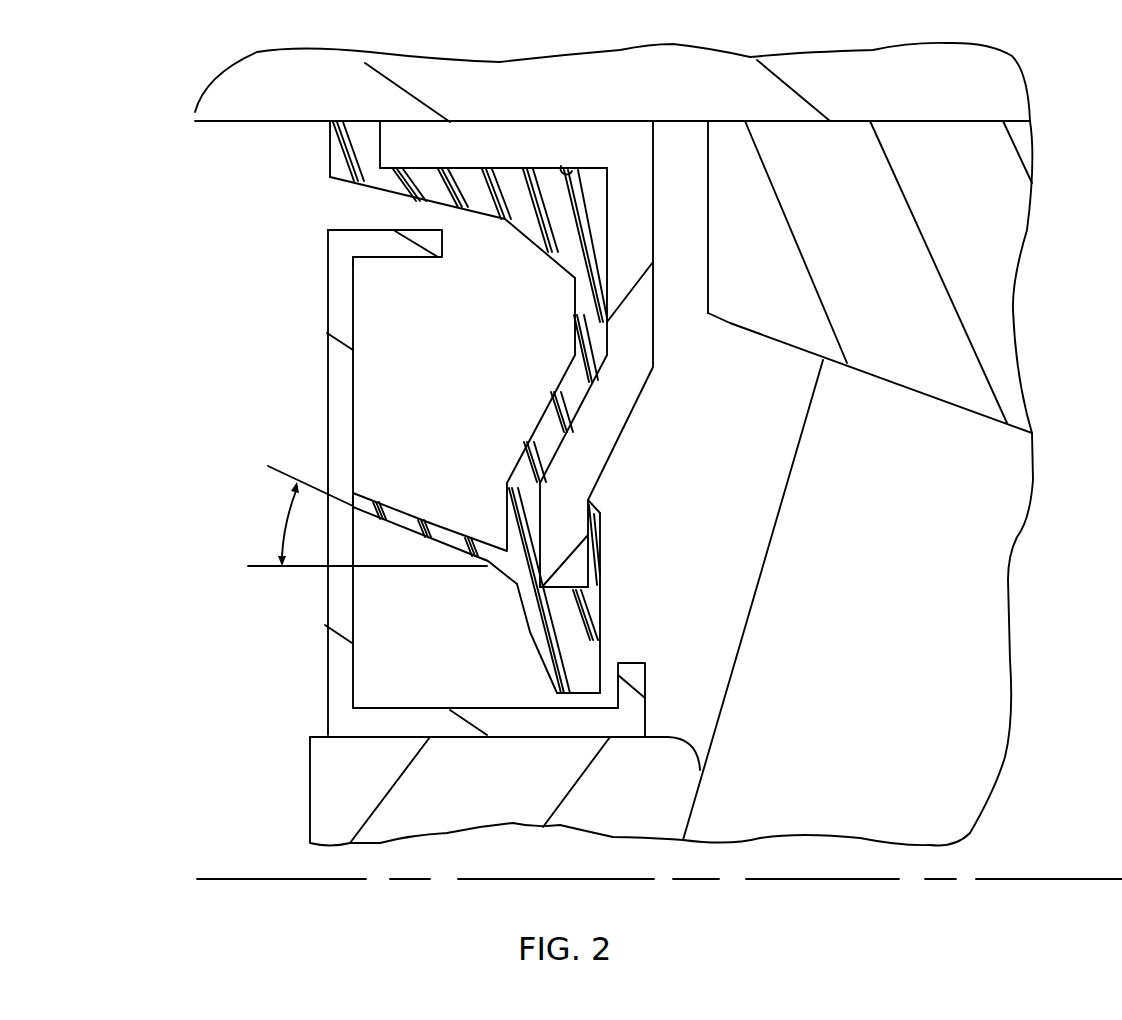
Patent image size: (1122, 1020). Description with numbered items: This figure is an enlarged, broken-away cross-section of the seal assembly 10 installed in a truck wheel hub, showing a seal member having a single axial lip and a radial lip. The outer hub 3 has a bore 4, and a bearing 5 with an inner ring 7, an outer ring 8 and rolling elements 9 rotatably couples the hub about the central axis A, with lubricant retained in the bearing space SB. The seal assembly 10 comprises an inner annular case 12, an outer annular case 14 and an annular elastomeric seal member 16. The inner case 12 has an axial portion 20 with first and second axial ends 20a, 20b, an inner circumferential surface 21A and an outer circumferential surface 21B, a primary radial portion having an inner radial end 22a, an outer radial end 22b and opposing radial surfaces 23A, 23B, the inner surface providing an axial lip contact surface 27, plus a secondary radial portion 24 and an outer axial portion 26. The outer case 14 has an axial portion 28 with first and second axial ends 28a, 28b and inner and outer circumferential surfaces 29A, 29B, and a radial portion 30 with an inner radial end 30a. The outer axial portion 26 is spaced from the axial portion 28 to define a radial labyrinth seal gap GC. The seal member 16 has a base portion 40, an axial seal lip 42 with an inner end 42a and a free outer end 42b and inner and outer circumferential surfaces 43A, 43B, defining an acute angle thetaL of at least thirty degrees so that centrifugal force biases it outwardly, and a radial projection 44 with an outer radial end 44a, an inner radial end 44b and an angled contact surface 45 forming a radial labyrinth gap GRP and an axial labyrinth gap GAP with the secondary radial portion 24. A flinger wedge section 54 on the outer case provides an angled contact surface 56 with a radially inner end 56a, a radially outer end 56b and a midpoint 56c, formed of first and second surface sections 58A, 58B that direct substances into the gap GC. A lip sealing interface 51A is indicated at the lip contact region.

The outer hub 3 is at (198, 113).
The bore 4 is at (258, 126).
The bearing 5 is at (750, 540).
The inner ring 7 is at (320, 778).
The outer ring 8 is at (1003, 243).
The rolling elements 9 is at (980, 573).
The seal assembly 10 is at (168, 308).
The inner annular case 12 is at (243, 385).
The outer annular case 14 is at (690, 413).
The annular elastomeric seal member 16 is at (543, 305).
The axial portion 20 is at (550, 740).
The first axial end 20a is at (355, 724).
The second axial end 20b is at (611, 730).
The inner circumferential surface 21A is at (467, 740).
The outer circumferential surface 21B is at (416, 707).
The inner radial end 22a is at (335, 692).
The outer radial end 22b is at (333, 257).
The inner radial surface 23A is at (357, 318).
The outer radial surface 23B is at (327, 312).
The secondary radial portion 24 is at (648, 680).
The outer axial portion 26 is at (411, 261).
The axial lip contact surface 27 is at (358, 406).
The axial portion 28 is at (560, 119).
The first axial end 28a is at (612, 130).
The second axial end 28b is at (385, 120).
The inner circumferential surface 29A is at (572, 168).
The outer circumferential surface 29B is at (508, 120).
The radial portion 30 is at (650, 298).
The inner radial end 30a is at (575, 578).
The base portion 40 is at (558, 372).
The axial seal lip 42 is at (446, 500).
The first inner end 42a is at (494, 547).
The second free outer end 42b is at (362, 496).
The inner circumferential surface 43A is at (389, 527).
The outer circumferential surface 43B is at (388, 494).
The radial projection 44 is at (603, 611).
The outer radial end 44a is at (548, 593).
The inner radial end 44b is at (555, 684).
The angled contact surface 45 is at (530, 632).
The arm axis 51A is at (347, 497).
The flinger wedge section 54 is at (499, 217).
The angled contact surface 56 is at (470, 214).
The radially inner end 56a is at (571, 278).
The radially outer end 56b is at (328, 177).
The midpoint 56c is at (497, 218).
The first surface section 58A is at (534, 244).
The second surface section 58B is at (447, 207).
The central axis A is at (1072, 879).
The radial labyrinth seal gap GC is at (376, 206).
The axial labyrinth seal gap GAP is at (608, 670).
The radial labyrinth seal gap GRP is at (580, 703).
The bearing space SB is at (706, 482).
The acute angle thetaL is at (367, 516).